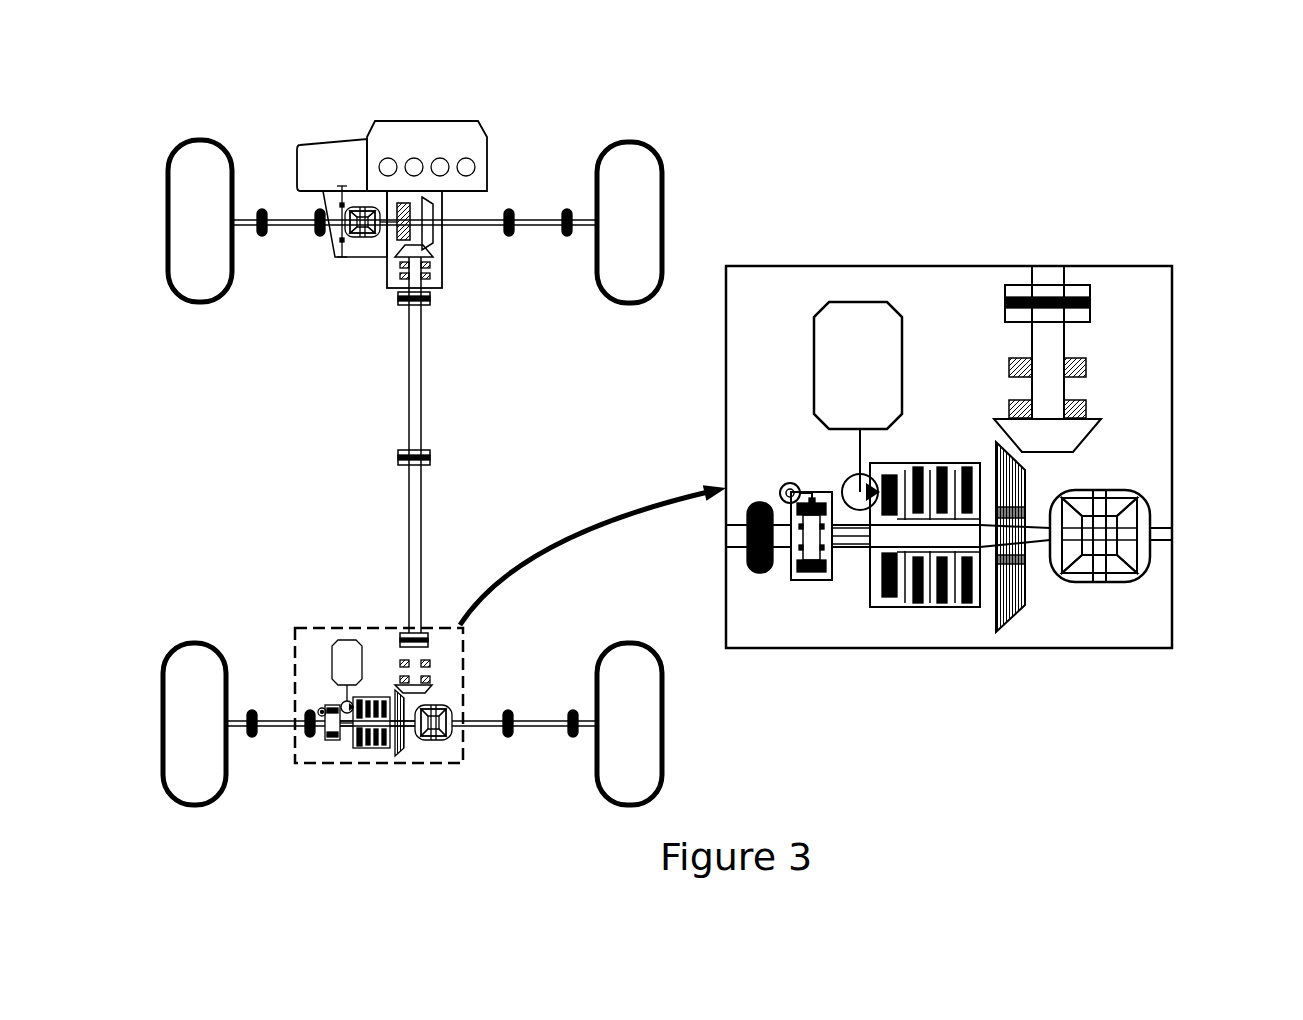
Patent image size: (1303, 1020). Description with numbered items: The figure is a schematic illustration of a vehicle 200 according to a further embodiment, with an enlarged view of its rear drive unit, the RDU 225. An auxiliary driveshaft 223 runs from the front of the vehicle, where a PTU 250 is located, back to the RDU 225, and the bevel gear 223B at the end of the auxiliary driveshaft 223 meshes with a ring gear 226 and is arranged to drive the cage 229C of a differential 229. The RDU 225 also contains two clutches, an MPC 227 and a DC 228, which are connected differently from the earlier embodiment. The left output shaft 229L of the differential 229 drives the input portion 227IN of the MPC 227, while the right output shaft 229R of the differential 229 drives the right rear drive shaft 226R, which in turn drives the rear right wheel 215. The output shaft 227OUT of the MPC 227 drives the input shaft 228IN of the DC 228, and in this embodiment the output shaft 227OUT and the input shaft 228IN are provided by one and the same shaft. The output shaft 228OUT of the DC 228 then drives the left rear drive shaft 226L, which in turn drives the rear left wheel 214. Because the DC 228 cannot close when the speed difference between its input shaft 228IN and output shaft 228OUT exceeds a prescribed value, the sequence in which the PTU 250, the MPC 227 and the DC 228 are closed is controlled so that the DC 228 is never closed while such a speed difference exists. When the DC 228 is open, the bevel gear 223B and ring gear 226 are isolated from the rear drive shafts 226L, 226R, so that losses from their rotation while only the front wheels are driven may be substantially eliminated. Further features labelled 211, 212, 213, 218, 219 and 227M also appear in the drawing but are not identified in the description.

The vehicle 200 is at (703, 134).
The engine 211 is at (453, 147).
The front left wheel 212 is at (197, 277).
The front right wheel 213 is at (625, 168).
The rear left wheel 214 is at (194, 672).
The rear right wheel 215 is at (627, 663).
The transmission 218 is at (333, 160).
The front axle shafts 219 is at (285, 218).
The auxiliary driveshaft 223 is at (418, 352).
The bevel gear 223B is at (430, 690).
The RDU 225 is at (443, 627).
The ring gear 226 is at (392, 690).
The left rear drive shaft 226L is at (278, 720).
The right rear drive shaft 226R is at (542, 725).
The MPC 227 is at (376, 750).
The clutch motor 227M is at (343, 647).
The input portion of the MPC 227IN is at (937, 465).
The output shaft of the MPC 227OUT is at (346, 750).
The DC 228 is at (323, 741).
The input shaft of the DC 228IN is at (605, 695).
The output shaft of the DC 228OUT is at (320, 709).
The differential 229 is at (459, 748).
The left output shaft 229L is at (405, 718).
The right output shaft 229R is at (1213, 534).
The cage 229C is at (447, 748).
The PTU 250 is at (442, 267).